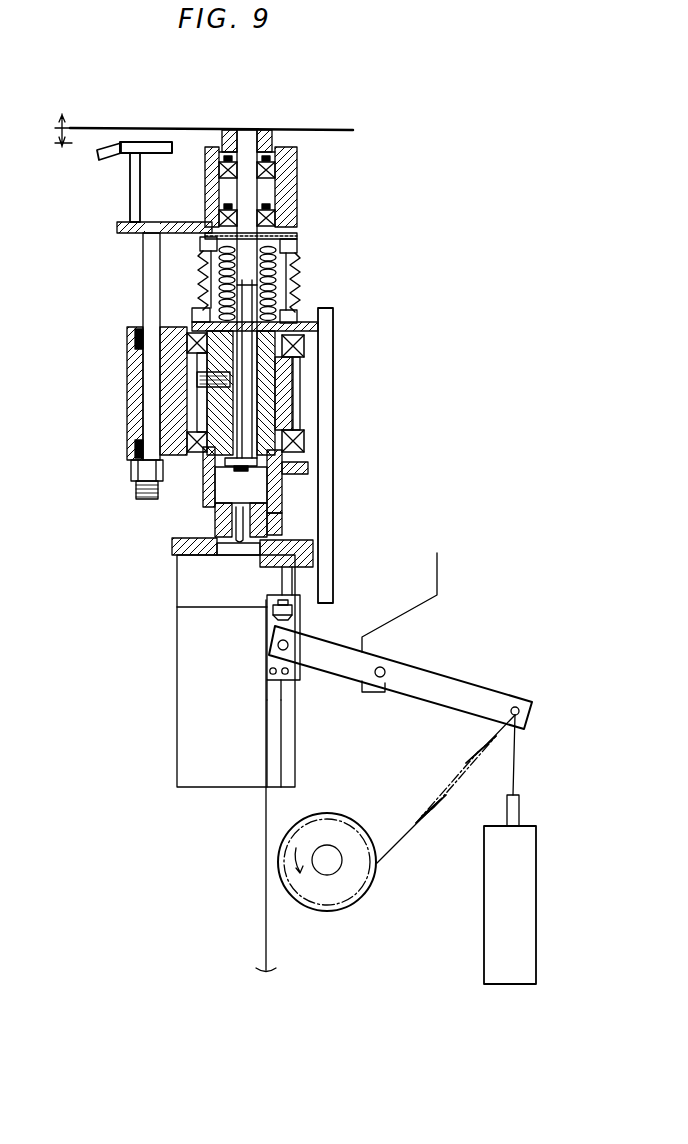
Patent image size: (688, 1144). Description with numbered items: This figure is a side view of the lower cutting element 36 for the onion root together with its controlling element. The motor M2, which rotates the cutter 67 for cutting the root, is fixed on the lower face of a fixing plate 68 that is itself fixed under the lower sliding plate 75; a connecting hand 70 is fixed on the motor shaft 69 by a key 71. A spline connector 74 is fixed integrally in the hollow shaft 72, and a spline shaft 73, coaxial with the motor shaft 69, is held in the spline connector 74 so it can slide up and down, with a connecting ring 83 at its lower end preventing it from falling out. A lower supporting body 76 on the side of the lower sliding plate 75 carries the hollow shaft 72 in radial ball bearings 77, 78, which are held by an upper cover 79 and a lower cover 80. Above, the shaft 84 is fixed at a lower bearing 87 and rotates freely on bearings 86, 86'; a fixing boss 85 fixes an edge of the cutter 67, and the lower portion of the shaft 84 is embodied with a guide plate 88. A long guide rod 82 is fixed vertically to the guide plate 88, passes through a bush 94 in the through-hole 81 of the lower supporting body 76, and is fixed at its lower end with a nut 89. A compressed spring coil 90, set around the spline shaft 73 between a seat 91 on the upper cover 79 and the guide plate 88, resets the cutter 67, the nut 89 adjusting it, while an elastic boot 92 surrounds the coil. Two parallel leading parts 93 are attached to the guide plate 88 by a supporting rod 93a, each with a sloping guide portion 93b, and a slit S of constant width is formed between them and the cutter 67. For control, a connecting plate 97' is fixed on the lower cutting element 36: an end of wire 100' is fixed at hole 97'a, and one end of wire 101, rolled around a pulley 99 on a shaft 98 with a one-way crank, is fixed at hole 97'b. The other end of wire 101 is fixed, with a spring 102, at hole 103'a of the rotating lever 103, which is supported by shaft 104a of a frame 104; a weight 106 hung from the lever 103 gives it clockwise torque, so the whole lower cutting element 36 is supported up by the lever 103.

The lower cutting element 36 is at (114, 353).
The cutter for the root 67 is at (325, 129).
The slit S is at (52, 131).
The leading parts 93 is at (163, 141).
The supporting rod 93a is at (130, 200).
The guide portion 93b is at (107, 157).
The fixing boss 85 is at (275, 130).
The guide plate 88 is at (175, 228).
The lower bearing 87 is at (300, 212).
The shaft 84 is at (255, 192).
The bearing 86 is at (289, 161).
The bearing 86' is at (292, 223).
The seat 91 is at (297, 247).
The spline shaft 73 is at (263, 272).
The boat 92 is at (300, 290).
The compressed spring coil 90 is at (200, 302).
The upper cover 79 is at (300, 322).
The guide rod 82 is at (142, 262).
The through-hole 81 is at (140, 393).
The bush 94 is at (132, 332).
The nut 89 is at (132, 471).
The spline connector 74 is at (262, 400).
The lower supporting body 76 is at (283, 382).
The radial ball bearing 77 is at (300, 348).
The radial ball bearing 78 is at (300, 443).
The lower cover 80 is at (305, 470).
The connecting ring 83 is at (245, 390).
The hollow shaft 72 is at (275, 487).
The connecting hand 70 is at (208, 505).
The motor shaft 69 is at (236, 517).
The key 71 is at (255, 527).
The fixing plate 68 is at (175, 547).
The lower sliding plate 75 is at (326, 545).
The motor M2 is at (206, 671).
The connecting plate 97' is at (214, 623).
The hole 97'a is at (200, 688).
The hole 97'b is at (319, 698).
The wire 101 is at (285, 780).
The wire 100' is at (230, 786).
The pulley 99 is at (350, 825).
The shaft 98 is at (333, 880).
The frame 104 is at (410, 622).
The shaft 104a is at (385, 672).
The rotating lever 103 is at (431, 710).
The hole 103'a is at (563, 713).
The spring 102 is at (450, 822).
The weight 106 is at (536, 855).